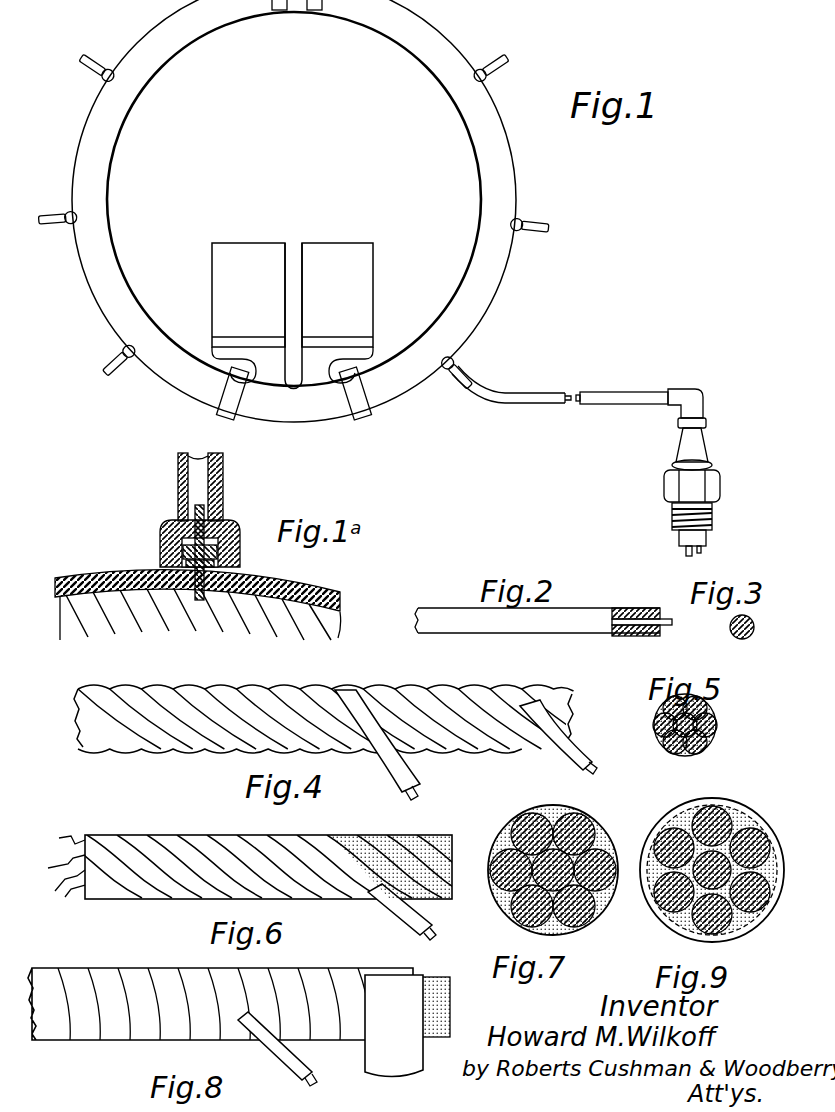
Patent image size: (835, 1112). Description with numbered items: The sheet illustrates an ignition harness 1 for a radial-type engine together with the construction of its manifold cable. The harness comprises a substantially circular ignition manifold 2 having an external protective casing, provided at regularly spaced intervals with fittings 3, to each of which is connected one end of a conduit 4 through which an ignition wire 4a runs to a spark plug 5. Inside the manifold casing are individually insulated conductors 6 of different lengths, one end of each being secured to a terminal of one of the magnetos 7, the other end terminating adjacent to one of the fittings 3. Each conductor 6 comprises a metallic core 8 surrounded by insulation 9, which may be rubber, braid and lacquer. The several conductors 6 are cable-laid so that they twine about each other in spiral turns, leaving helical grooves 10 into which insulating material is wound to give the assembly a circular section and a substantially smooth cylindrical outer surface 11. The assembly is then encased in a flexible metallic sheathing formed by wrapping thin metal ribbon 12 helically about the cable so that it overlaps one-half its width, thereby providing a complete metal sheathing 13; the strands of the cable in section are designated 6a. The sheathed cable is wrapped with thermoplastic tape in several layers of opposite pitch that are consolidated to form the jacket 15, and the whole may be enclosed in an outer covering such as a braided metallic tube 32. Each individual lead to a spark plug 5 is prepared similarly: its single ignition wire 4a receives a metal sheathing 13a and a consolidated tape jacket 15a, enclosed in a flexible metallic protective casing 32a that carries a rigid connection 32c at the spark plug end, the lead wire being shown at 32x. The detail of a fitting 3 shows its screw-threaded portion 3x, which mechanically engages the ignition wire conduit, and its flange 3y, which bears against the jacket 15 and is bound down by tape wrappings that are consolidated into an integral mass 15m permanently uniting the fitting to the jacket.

In FIG. 1, the ignition harness 1 is at (474, 43).
In FIG. 1, the ignition manifold 2 is at (148, 270).
In FIG. 1, the fitting 3 is at (480, 68).
In FIG. 1A, the fitting 3 is at (226, 526).
In FIG. 2, the fitting 3 is at (596, 603).
In FIG. 1A, the conduit 4 is at (152, 495).
In FIG. 1A, the ignition wire 4a is at (222, 504).
In FIG. 1, the spark plug 5 is at (716, 490).
In FIG. 4, the spark plug 5 is at (182, 688).
In FIG. 2, the conductor 6 is at (447, 608).
In FIG. 4, the conductor 6 is at (288, 694).
In FIG. 6, the conductor 6 is at (426, 928).
In FIG. 7, the cable strand 6a is at (494, 836).
In FIG. 9, the cable strand 6a is at (740, 818).
In FIG. 1, the magneto 7 is at (246, 258).
In FIG. 6, the magneto 7 is at (190, 833).
In FIG. 1A, the core 8 is at (212, 562).
In FIG. 2, the core 8 is at (666, 612).
In FIG. 3, the core 8 is at (752, 632).
In FIG. 5, the core 8 is at (716, 730).
In FIG. 4, the core 8 is at (420, 794).
In FIG. 6, the core 8 is at (424, 938).
In FIG. 8, the core 8 is at (302, 1082).
In FIG. 7, the core 8 is at (600, 840).
In FIG. 2, the insulation 9 is at (642, 636).
In FIG. 3, the insulation 9 is at (730, 626).
In FIG. 5, the insulation 9 is at (706, 710).
In FIG. 8, the insulation 9 is at (326, 956).
In FIG. 4, the helical grooves 10 is at (428, 700).
In FIG. 6, the cylindrical outer surface 11 is at (391, 854).
In FIG. 7, the cylindrical outer surface 11 is at (572, 811).
In FIG. 8, the metal ribbon 12 is at (408, 1016).
In FIG. 9, the metal sheathing 13 is at (700, 800).
In FIG. 1A, the metal sheathing 13a is at (196, 456).
In FIG. 1A, the jacket 15 is at (340, 610).
In FIG. 1A, the jacket 15a is at (224, 470).
In FIG. 1A, the integral mass 15m is at (96, 578).
In FIG. 1A, the braided metallic tube 32 is at (272, 586).
In FIG. 1A, the flexible metallic protective casing 32a is at (178, 468).
In FIG. 1, the rigid connection 32c is at (676, 392).
In FIG. 1, the lead wire 32x is at (452, 374).
In FIG. 1A, the lead wire 32x is at (176, 530).
In FIG. 1A, the screw-threaded portion 3x is at (182, 550).
In FIG. 1A, the flange 3y is at (182, 564).